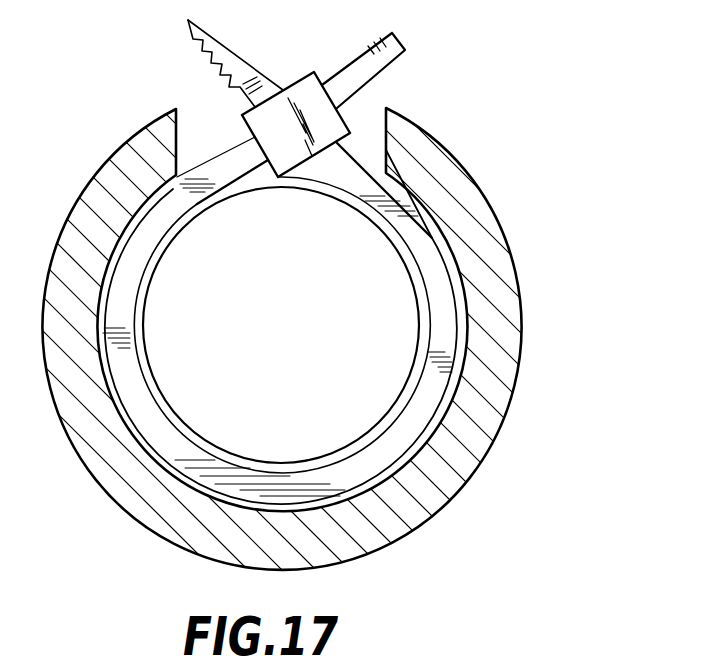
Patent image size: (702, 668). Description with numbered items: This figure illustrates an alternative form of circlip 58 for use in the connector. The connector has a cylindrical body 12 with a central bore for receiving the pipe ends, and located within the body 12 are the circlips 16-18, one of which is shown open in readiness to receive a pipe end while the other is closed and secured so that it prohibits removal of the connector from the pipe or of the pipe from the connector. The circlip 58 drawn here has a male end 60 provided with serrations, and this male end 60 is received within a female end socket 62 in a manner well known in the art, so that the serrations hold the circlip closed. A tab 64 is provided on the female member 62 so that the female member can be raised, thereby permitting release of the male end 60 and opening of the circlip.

The cylindrical body 12 is at (479, 449).
The circlips 16-18 is at (458, 345).
The circlip 58 is at (154, 463).
The male end 60 is at (234, 54).
The female end socket 62 is at (311, 74).
The tab 64 is at (402, 41).